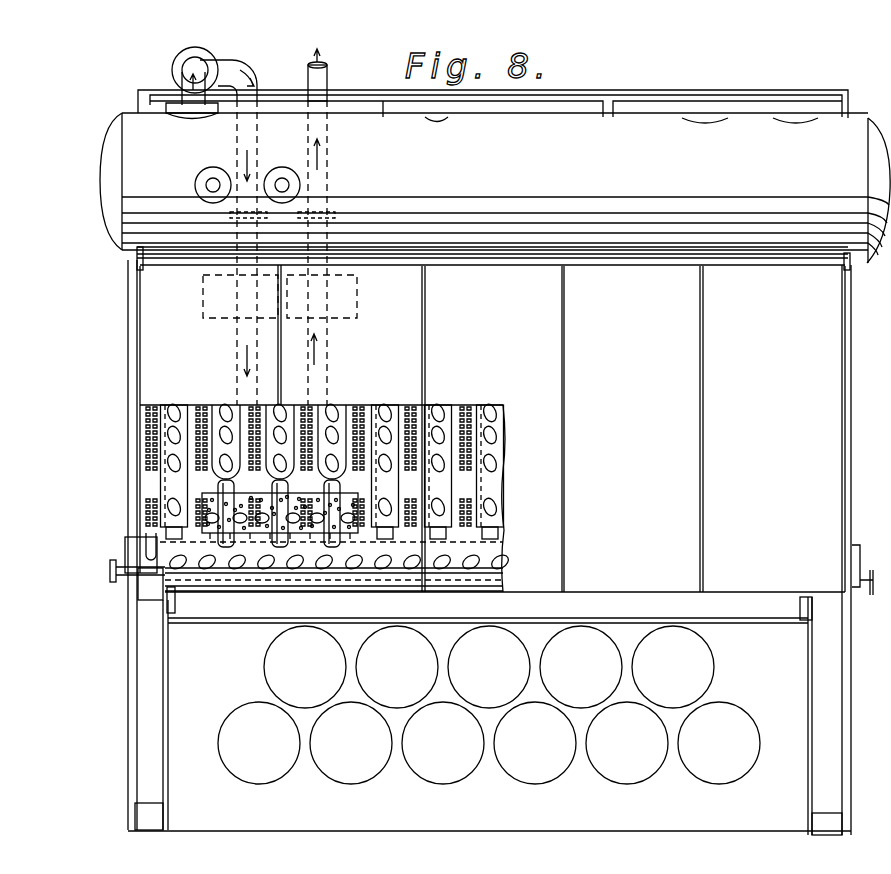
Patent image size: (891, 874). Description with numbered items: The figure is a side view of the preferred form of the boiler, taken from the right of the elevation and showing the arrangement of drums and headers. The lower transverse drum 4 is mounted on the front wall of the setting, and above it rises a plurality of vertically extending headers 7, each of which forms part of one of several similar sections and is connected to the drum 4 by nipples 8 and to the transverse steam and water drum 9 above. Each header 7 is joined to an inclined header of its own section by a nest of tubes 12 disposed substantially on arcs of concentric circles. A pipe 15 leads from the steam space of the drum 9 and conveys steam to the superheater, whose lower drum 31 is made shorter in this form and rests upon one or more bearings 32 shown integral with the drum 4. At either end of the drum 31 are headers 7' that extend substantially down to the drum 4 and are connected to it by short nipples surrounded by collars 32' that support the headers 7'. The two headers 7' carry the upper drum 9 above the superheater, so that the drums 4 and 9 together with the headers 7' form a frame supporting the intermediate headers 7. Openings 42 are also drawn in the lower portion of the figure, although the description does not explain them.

The lower transverse drum 4 is at (133, 545).
The vertically extending header 7 is at (220, 440).
The end header 7' is at (296, 507).
The nipple 8 is at (227, 545).
The transverse steam and water drum 9 is at (143, 167).
The nest of tubes 12 is at (150, 408).
The pipe 15 is at (190, 72).
The lower superheater drum 31 is at (352, 505).
The bearing 32 is at (280, 552).
The collar 32' is at (292, 551).
The roller openings 42 is at (252, 705).